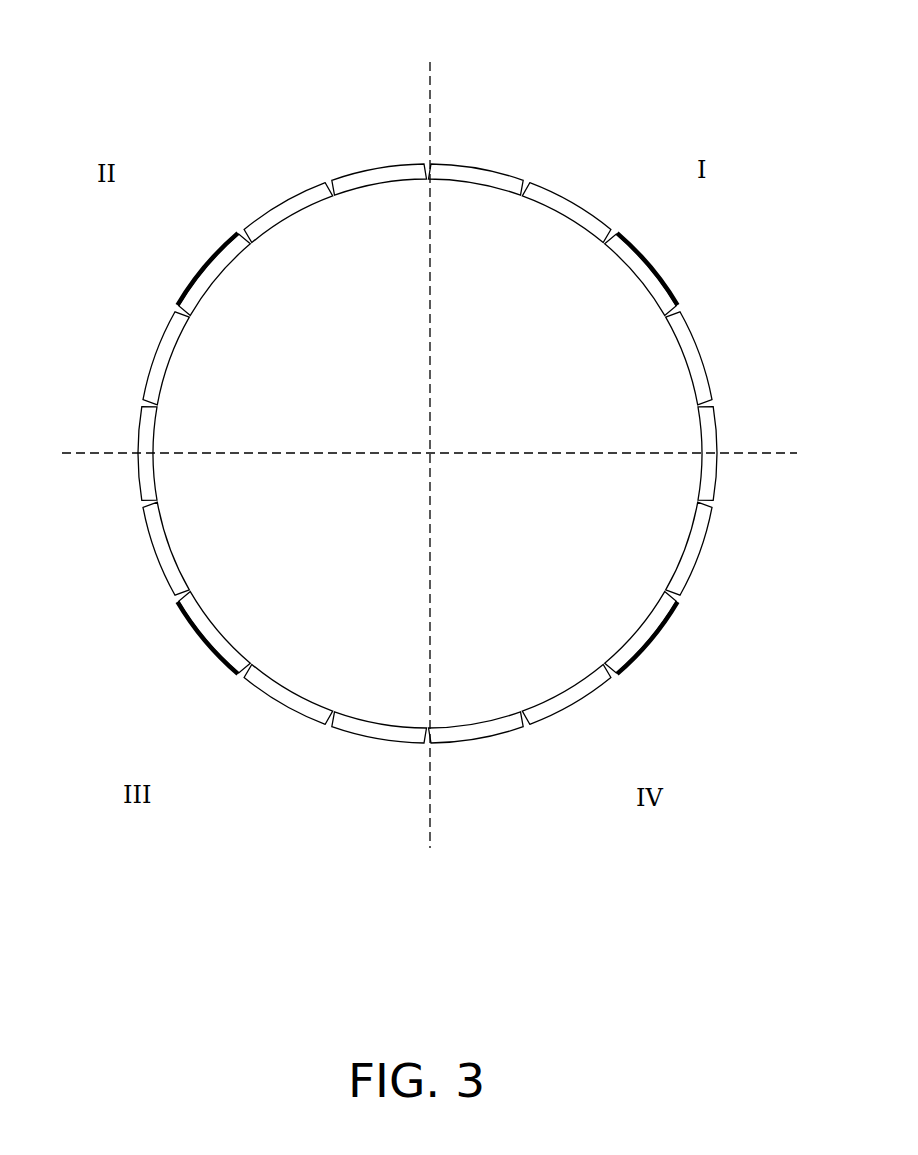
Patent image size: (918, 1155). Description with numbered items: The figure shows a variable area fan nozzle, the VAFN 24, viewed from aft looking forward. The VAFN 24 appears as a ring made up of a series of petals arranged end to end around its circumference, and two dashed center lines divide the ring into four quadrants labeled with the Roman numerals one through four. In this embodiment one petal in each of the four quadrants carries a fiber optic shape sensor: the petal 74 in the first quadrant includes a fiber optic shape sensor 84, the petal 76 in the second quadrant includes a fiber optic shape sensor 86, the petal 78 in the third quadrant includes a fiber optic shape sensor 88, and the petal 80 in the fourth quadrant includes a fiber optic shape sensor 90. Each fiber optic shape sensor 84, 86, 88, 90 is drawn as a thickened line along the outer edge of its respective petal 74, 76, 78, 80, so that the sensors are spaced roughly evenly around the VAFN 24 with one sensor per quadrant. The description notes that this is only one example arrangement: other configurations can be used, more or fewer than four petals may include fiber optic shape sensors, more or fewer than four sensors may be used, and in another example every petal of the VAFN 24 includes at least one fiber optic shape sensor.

The VAFN 24 is at (190, 105).
The petal 74 is at (648, 288).
The petal 76 is at (210, 277).
The petal 78 is at (216, 637).
The petal 80 is at (648, 636).
The fiber optic shape sensor 84 is at (650, 267).
The fiber optic shape sensor 86 is at (200, 284).
The fiber optic shape sensor 88 is at (210, 649).
The fiber optic shape sensor 90 is at (648, 645).